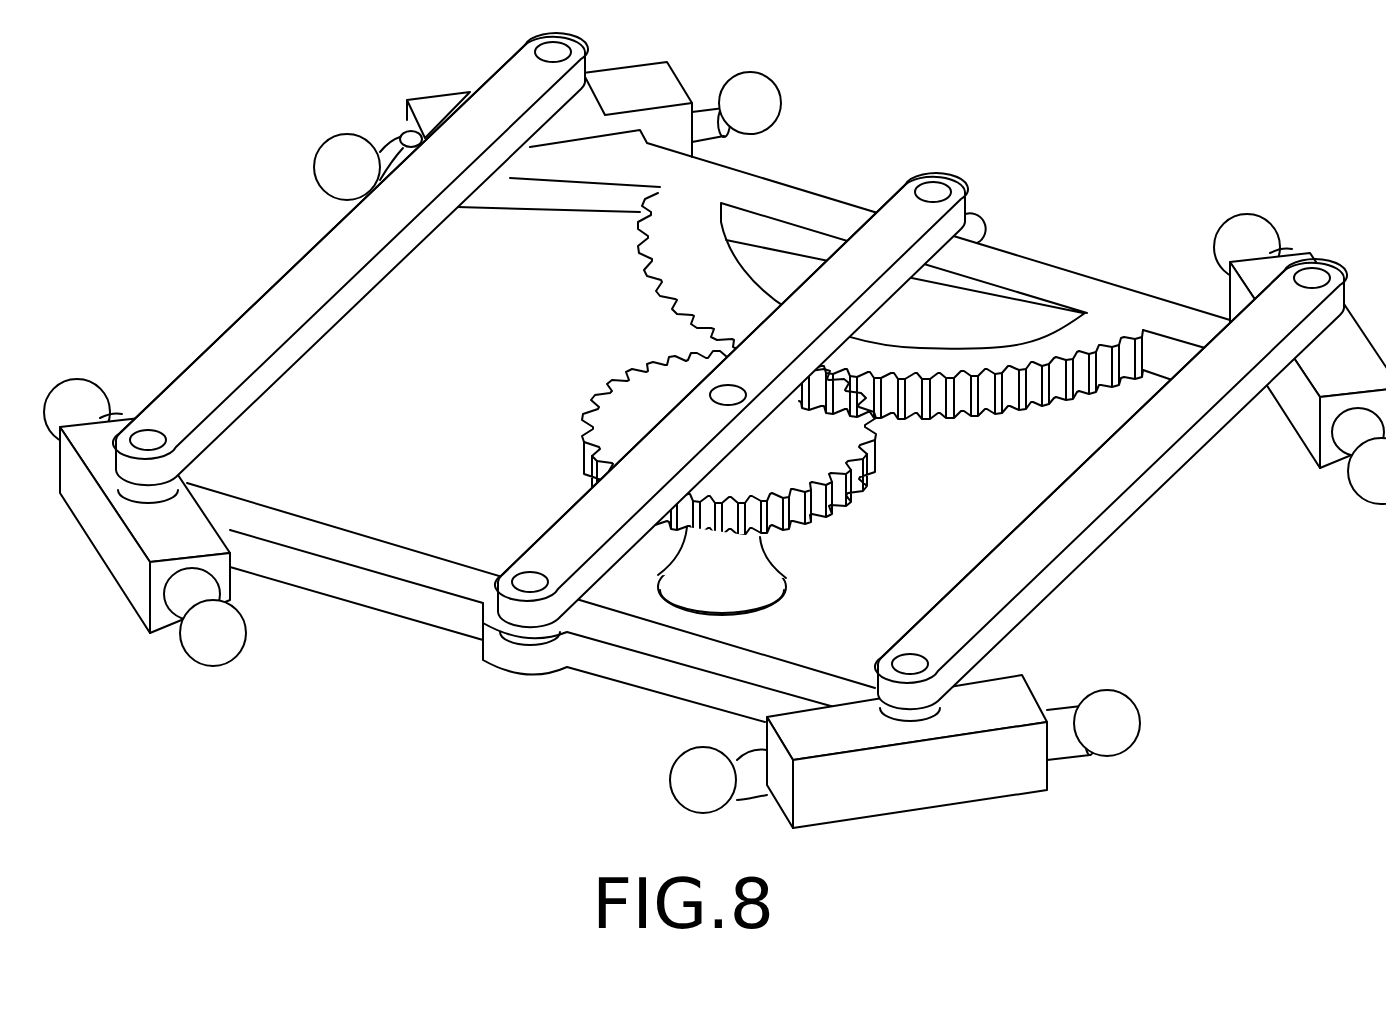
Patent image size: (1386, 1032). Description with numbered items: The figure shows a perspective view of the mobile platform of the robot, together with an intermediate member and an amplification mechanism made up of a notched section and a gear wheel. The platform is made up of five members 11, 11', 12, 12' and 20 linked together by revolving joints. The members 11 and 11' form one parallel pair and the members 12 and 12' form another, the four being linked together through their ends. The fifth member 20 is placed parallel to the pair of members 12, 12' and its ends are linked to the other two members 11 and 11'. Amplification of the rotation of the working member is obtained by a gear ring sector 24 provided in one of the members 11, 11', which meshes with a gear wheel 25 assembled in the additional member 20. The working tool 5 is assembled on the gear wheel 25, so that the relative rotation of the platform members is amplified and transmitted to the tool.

The working tool 5 is at (708, 588).
The member 11 is at (531, 624).
The member 11' is at (772, 222).
The member 12 is at (1111, 490).
The member 12' is at (350, 268).
The fifth member 20 is at (563, 545).
The gear ring sector 24 is at (980, 365).
The gear wheel 25 is at (860, 455).